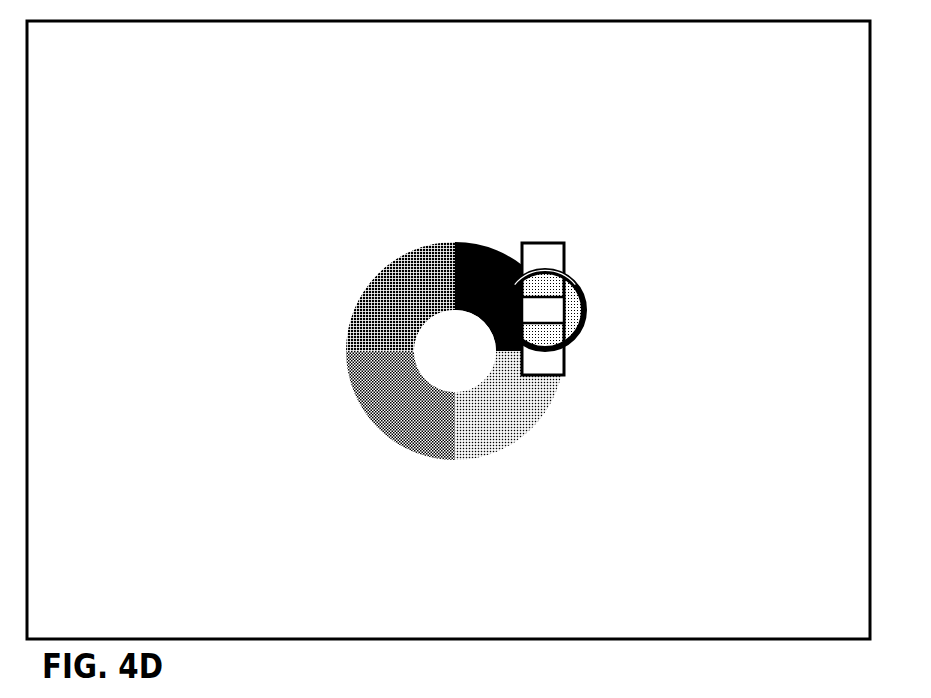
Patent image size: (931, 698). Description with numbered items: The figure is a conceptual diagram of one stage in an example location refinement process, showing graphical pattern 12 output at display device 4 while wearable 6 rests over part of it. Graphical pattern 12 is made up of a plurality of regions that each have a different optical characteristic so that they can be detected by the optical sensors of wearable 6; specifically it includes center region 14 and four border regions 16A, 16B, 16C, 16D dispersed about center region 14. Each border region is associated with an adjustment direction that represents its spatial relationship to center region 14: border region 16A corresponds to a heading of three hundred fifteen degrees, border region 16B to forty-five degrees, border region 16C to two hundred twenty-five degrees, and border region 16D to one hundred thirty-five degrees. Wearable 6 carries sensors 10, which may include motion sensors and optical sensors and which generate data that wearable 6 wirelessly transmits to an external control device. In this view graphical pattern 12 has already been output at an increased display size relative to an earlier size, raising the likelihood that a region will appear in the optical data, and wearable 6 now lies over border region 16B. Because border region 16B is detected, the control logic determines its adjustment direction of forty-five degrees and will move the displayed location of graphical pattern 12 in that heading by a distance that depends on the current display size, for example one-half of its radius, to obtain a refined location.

The display device 4 is at (441, 84).
The graphical pattern 12 is at (412, 348).
The border region 16A is at (387, 280).
The border region 16B is at (470, 243).
The border region 16C is at (368, 407).
The border region 16D is at (480, 447).
The center region 14 is at (455, 358).
The wearable 6 is at (552, 243).
The sensors 10 is at (534, 322).